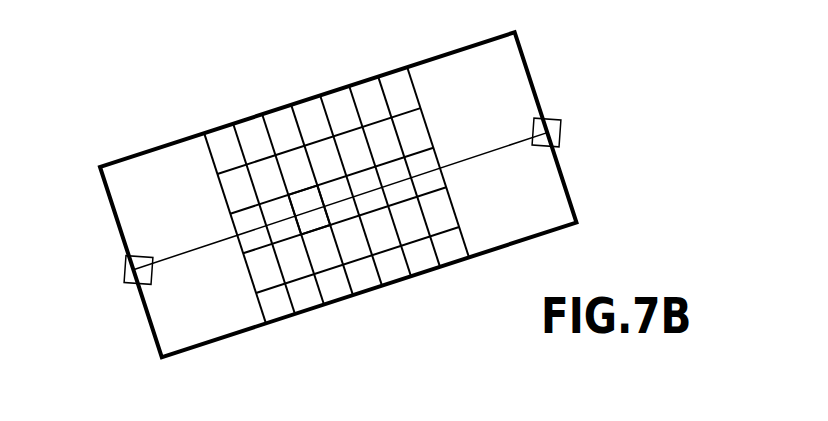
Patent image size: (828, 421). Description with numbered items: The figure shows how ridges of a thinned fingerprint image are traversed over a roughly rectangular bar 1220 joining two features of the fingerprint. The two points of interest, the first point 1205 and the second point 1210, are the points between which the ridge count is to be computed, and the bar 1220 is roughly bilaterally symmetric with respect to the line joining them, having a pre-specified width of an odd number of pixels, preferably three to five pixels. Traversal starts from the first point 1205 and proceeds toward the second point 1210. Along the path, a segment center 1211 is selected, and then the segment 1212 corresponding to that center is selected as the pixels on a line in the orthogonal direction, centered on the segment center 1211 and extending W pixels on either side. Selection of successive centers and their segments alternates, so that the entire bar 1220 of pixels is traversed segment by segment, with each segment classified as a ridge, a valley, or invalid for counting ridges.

The rectangular bar 1220 is at (324, 91).
The point P1 1205 is at (125, 267).
The point P2 1210 is at (550, 120).
The segment center Ci 1211 is at (305, 209).
The segment Si 1212 is at (310, 260).